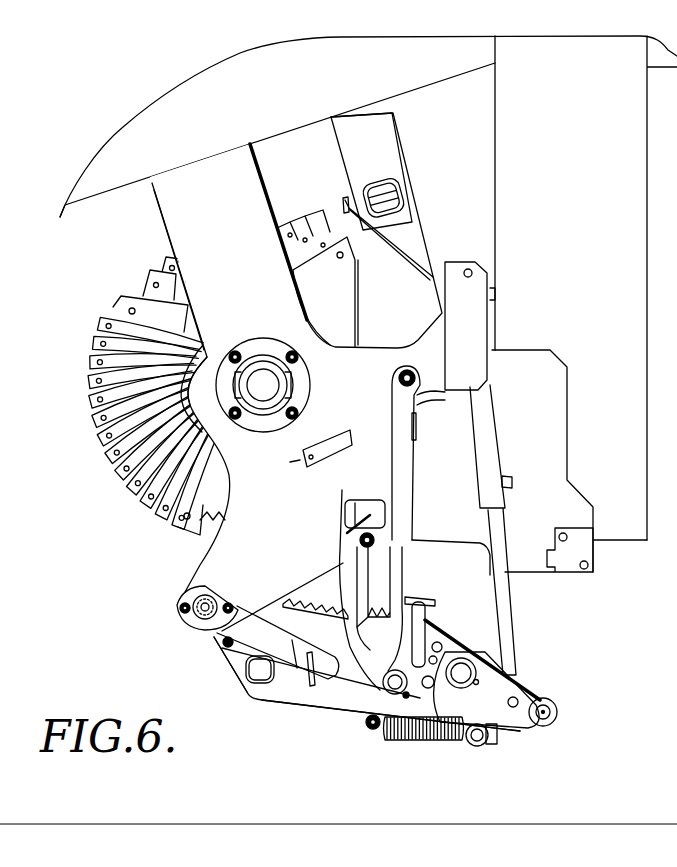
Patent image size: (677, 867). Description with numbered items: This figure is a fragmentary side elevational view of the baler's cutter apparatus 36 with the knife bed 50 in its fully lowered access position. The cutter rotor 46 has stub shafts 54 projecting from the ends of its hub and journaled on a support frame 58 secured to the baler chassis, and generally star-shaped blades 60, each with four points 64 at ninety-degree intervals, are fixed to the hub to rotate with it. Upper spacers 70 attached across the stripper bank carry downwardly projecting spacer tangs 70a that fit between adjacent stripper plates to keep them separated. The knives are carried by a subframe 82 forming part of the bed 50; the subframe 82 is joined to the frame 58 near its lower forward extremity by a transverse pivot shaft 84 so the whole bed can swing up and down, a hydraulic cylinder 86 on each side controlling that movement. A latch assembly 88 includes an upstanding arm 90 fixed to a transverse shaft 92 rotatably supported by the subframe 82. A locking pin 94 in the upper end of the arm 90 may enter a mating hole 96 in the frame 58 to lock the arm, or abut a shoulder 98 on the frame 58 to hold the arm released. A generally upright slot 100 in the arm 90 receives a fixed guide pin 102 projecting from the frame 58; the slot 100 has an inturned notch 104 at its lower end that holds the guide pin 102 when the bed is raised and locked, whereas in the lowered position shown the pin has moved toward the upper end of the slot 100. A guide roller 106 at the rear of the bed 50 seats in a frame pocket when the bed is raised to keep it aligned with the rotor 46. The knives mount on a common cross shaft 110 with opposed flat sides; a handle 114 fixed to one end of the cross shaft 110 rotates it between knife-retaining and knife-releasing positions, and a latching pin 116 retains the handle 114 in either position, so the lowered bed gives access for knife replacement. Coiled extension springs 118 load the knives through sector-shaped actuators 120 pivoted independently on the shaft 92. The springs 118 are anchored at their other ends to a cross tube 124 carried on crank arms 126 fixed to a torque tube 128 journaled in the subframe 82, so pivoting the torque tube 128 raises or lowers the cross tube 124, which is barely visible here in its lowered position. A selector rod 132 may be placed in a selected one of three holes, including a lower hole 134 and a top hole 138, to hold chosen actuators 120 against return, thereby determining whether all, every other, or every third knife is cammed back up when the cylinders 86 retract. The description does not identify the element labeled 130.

The cutter apparatus 36 is at (185, 658).
The cutter rotor 46 is at (110, 288).
The knife bed 50 is at (307, 722).
The stub shafts 54 is at (262, 377).
The support frame 58 is at (140, 213).
The star-shaped blades 60 is at (187, 392).
The points 64 is at (197, 512).
The upper spacers 70 is at (343, 216).
The spacer tangs 70a is at (393, 250).
The subframe 82 is at (277, 688).
The transverse pivot shaft 84 is at (195, 618).
The hydraulic cylinders 86 is at (492, 411).
The latch assembly 88 is at (335, 517).
The upstanding arms 90 is at (345, 584).
The transverse shaft 92 is at (386, 688).
The locking pin 94 is at (367, 502).
The mating hole 96 is at (302, 457).
The shoulder 98 is at (342, 433).
The slot 100 is at (368, 572).
The guide pin 102 is at (358, 541).
The inturned notch 104 is at (390, 620).
The guide roller 106 is at (558, 716).
The cross shaft 110 is at (267, 618).
The handle 114 is at (258, 633).
The latching pin 116 is at (313, 681).
The coiled extension springs 118 is at (402, 742).
The actuators 120 is at (373, 731).
The cross tube 124 is at (494, 740).
The crank arms 126 is at (466, 746).
The torque tube 128 is at (473, 662).
The link end 130 is at (514, 675).
The selector rod 132 is at (425, 622).
The lower hole 134 is at (429, 689).
The top hole 138 is at (432, 622).